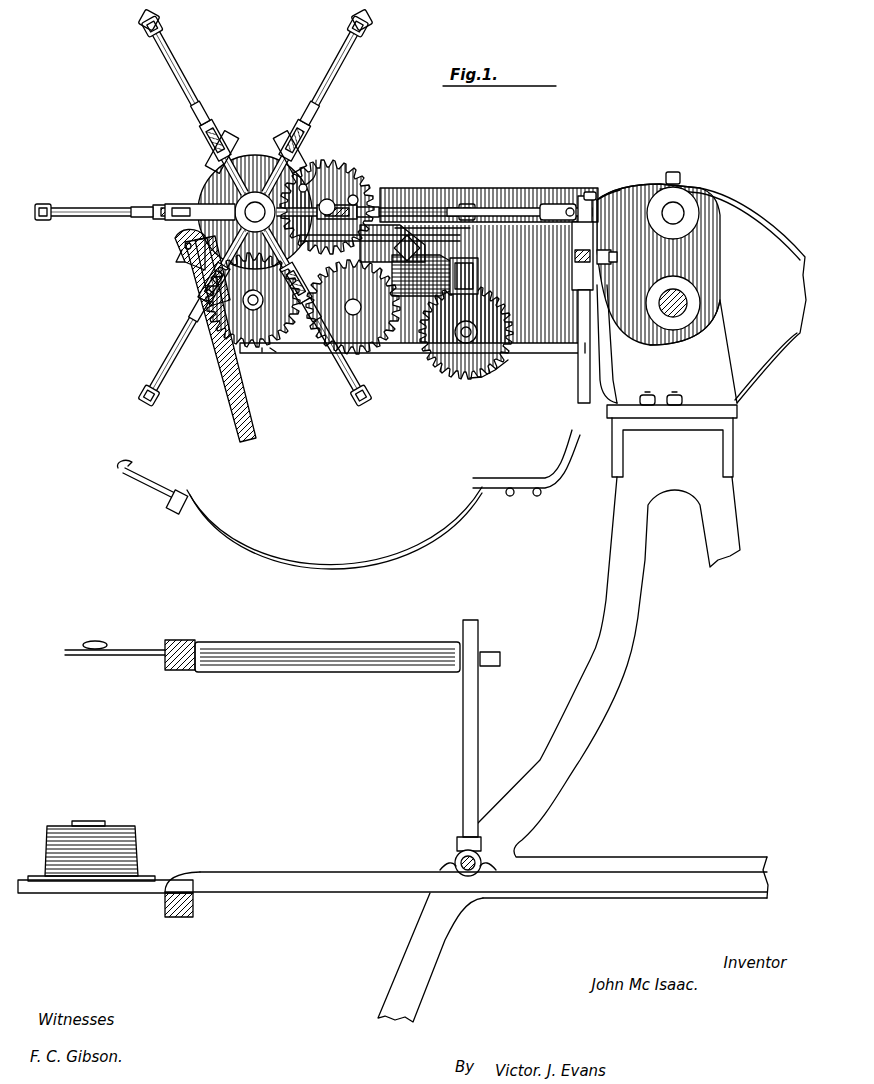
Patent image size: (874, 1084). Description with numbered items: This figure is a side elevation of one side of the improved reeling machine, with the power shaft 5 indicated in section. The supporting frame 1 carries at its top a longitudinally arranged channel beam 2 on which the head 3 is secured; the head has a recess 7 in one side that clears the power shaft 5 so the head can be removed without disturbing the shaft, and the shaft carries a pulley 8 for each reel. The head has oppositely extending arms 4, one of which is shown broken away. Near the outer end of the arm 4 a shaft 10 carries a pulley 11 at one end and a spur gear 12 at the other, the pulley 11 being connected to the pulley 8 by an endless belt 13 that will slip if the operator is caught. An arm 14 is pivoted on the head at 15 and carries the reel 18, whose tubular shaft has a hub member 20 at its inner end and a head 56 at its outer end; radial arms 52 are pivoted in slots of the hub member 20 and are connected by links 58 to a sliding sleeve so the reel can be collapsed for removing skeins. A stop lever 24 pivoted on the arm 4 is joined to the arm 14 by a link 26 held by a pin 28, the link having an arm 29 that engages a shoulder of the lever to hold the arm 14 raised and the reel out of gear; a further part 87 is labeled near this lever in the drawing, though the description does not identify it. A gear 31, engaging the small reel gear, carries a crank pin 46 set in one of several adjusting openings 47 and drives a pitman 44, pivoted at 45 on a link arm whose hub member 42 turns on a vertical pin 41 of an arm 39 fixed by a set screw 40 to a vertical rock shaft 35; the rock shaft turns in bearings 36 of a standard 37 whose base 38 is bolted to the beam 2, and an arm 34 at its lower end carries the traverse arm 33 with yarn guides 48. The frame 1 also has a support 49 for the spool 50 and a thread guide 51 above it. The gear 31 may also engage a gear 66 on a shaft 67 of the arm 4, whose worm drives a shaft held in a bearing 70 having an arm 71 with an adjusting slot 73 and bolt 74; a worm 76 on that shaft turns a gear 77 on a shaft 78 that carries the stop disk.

The supporting frame 1 is at (705, 515).
The channel beam 2 is at (735, 452).
The head 3 is at (693, 351).
The arm 4 is at (775, 270).
The power shaft 5 is at (680, 300).
The recess 7 is at (645, 312).
The pulley 8 is at (640, 335).
The shaft 10 is at (246, 308).
The pulley 11 is at (262, 352).
The spur gear 12 is at (278, 354).
The endless belt 13 is at (518, 354).
The arm 14 is at (468, 190).
The pivot 15 is at (676, 212).
The reel 18 is at (255, 35).
The hub member 20 is at (235, 205).
The stop lever 24 is at (248, 423).
The link 26 is at (188, 228).
The pin 28 is at (183, 246).
The arm 29 is at (180, 258).
The gear 31 is at (322, 170).
The traverse arm 33 is at (367, 556).
The arm 34 is at (548, 455).
The rock shaft 35 is at (578, 330).
The bearings 36 is at (576, 280).
The standard 37 is at (600, 386).
The base 38 is at (652, 412).
The arm 39 is at (610, 196).
The set screw 40 is at (618, 257).
The vertical pin 41 is at (585, 196).
The hub member 42 is at (590, 192).
The pitman 44 is at (500, 208).
The pivot 45 is at (562, 206).
The crank pin 46 is at (356, 196).
The adjusting openings 47 is at (318, 158).
The guides 48 is at (123, 478).
The support 49 is at (110, 887).
The spool 50 is at (132, 828).
The thread guide 51 is at (95, 644).
The radial arms 52 is at (163, 64).
The head 56 is at (250, 210).
The links 58 is at (228, 158).
The gear 66 is at (338, 360).
The shaft 67 is at (348, 312).
The bearing 70 is at (410, 300).
The arm 71 is at (415, 240).
The adjusting slot 73 is at (404, 238).
The bolt 74 is at (415, 234).
The worm 76 is at (470, 256).
The gear 77 is at (492, 368).
The shaft 78 is at (463, 340).
The cam 87 is at (205, 262).